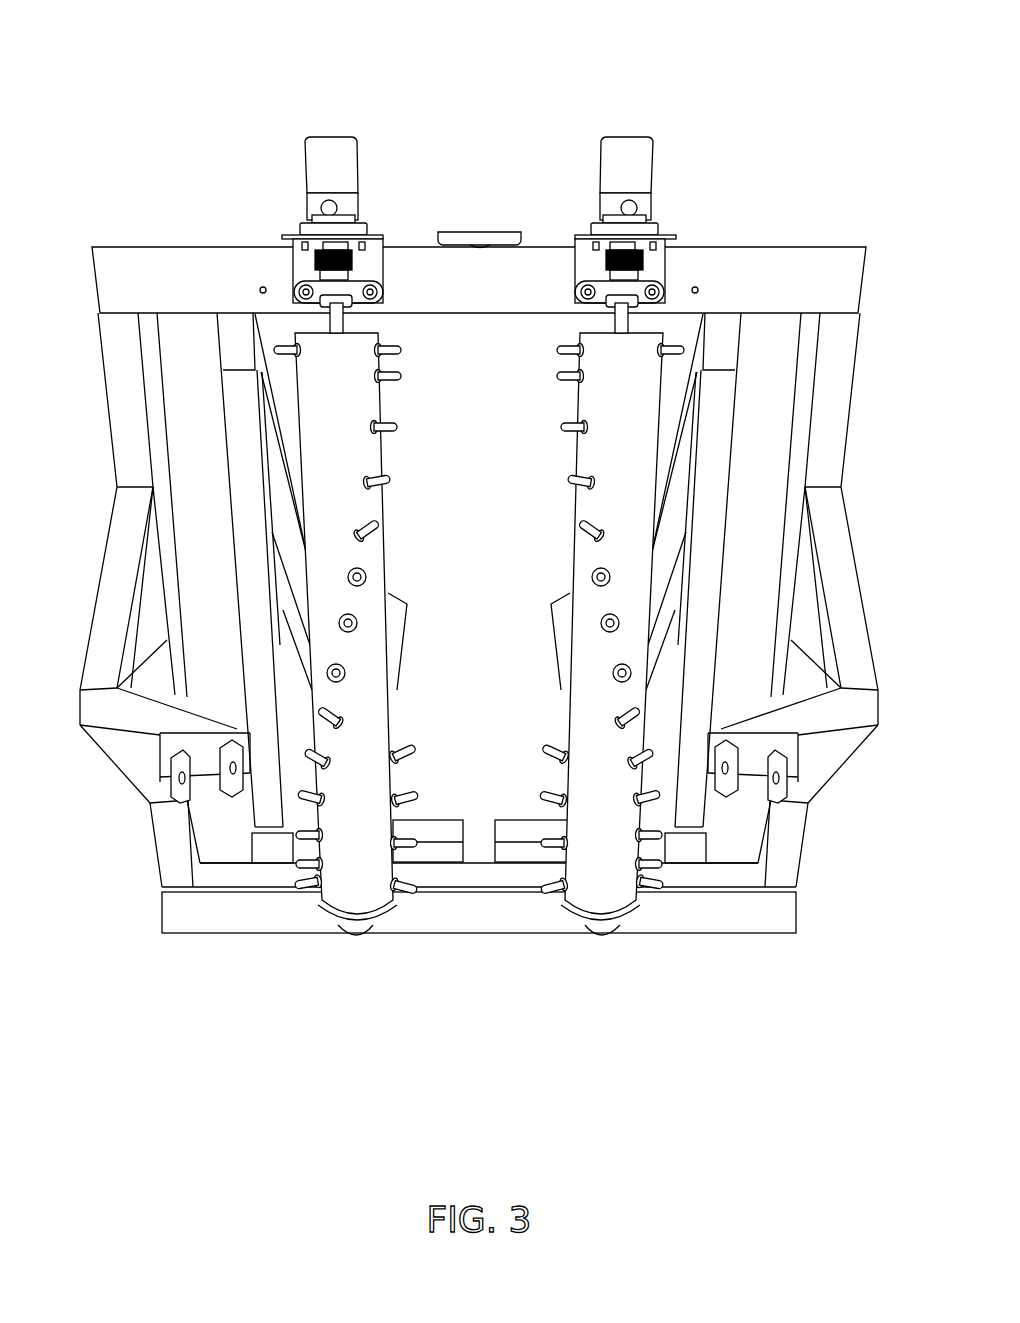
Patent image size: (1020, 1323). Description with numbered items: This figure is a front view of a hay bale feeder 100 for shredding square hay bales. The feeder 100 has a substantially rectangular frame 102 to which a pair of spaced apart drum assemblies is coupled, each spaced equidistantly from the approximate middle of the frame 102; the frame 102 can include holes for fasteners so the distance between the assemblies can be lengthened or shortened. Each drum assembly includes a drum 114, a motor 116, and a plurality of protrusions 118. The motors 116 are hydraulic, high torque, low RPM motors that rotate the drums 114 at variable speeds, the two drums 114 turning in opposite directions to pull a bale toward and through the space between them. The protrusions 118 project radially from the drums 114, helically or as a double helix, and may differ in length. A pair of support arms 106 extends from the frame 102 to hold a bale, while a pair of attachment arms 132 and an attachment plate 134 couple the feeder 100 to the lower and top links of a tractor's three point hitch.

The feeder 100 is at (135, 85).
The frame 102 is at (92, 278).
The support arms 106 is at (244, 437).
The drum 114 is at (388, 566).
The motor 116 is at (305, 177).
The protrusions 118 is at (565, 350).
The attachment arms 132 is at (137, 742).
The attachment plate 134 is at (484, 233).